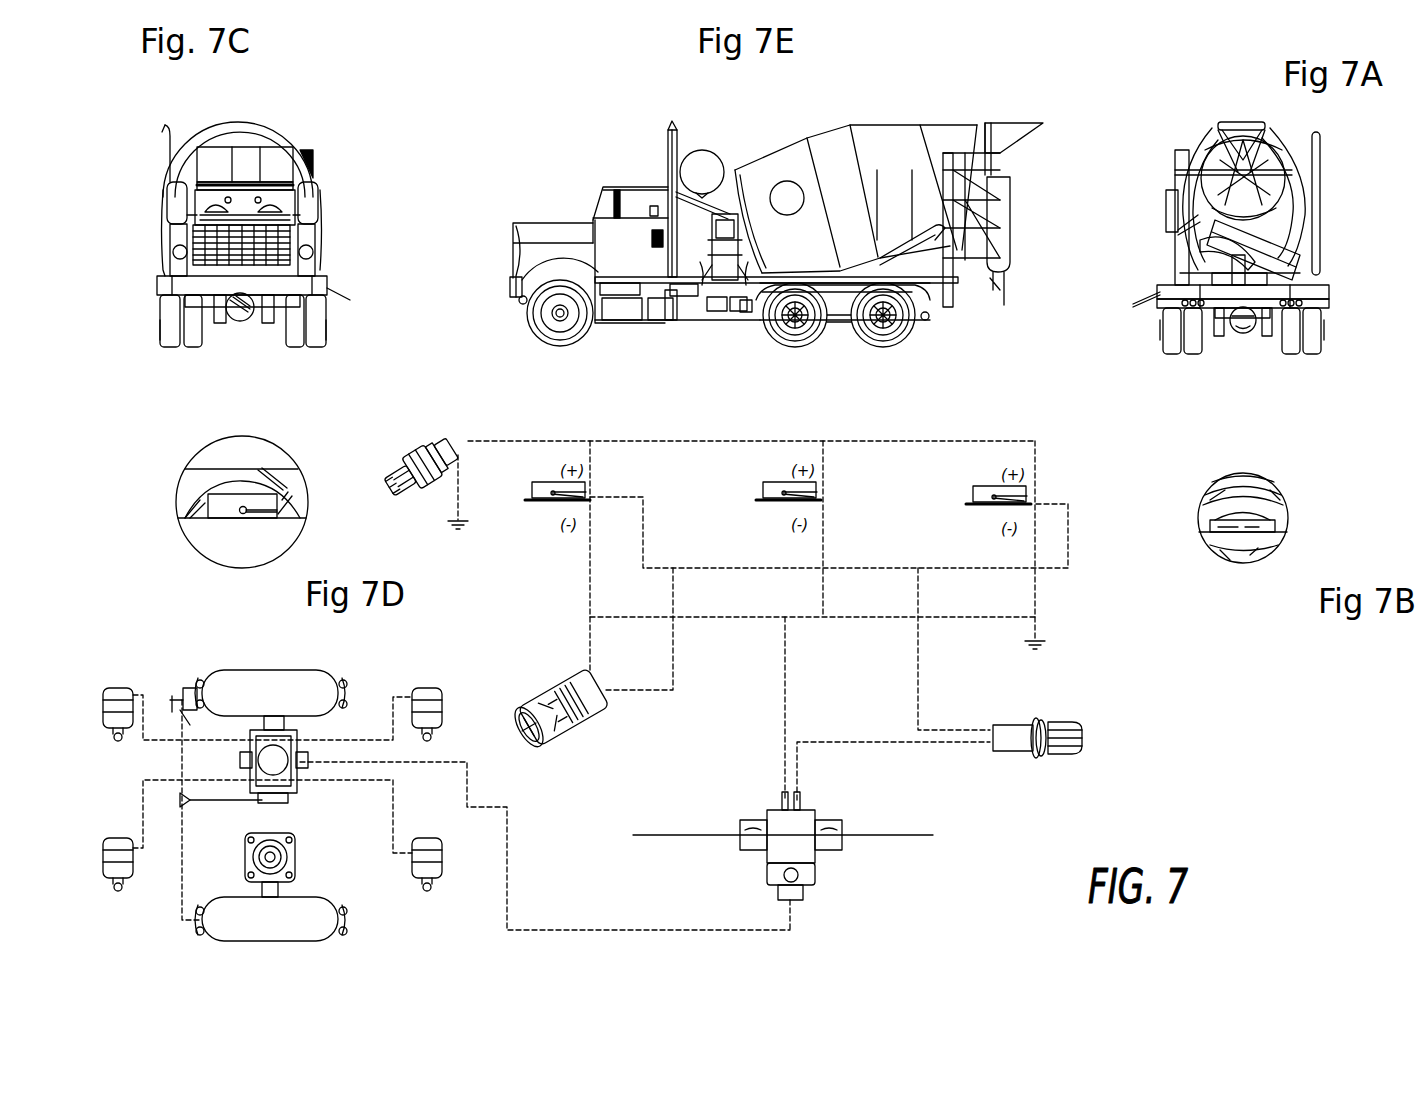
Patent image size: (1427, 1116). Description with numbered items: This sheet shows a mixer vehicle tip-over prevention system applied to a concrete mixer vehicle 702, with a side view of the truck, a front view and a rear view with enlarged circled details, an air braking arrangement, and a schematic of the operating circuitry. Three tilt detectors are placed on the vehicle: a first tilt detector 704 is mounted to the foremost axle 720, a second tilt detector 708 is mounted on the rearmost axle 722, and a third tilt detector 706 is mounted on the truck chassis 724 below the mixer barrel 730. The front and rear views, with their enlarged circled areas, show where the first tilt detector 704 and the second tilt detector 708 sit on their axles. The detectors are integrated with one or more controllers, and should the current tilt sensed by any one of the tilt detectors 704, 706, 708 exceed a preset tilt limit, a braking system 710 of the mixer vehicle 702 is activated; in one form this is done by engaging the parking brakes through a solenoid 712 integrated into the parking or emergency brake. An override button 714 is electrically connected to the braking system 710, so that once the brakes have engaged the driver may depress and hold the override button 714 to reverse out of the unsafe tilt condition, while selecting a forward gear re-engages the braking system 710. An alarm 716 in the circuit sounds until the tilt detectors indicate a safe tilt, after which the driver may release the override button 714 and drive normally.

In FIG. 7E, the mixer vehicle 702 is at (821, 242).
In FIG. 7C, the first tilt detector 704 is at (234, 318).
In FIG. 7E, the first tilt detector 704 is at (524, 303).
In FIG. 7E, the third tilt detector 706 is at (750, 314).
In FIG. 7A, the second tilt detector 708 is at (1250, 331).
In FIG. 7B, the second tilt detector 708 is at (1225, 560).
In FIG. 7E, the second tilt detector 708 is at (925, 316).
In FIG. 7D, the braking system 710 is at (180, 687).
In FIG. 7, the solenoid 712 is at (765, 810).
In FIG. 7, the override button 714 is at (1060, 722).
In FIG. 7, the audible alarm 716 is at (540, 745).
In FIG. 7E, the foremost axle 720 is at (740, 274).
In FIG. 7E, the rearmost axle 722 is at (908, 356).
In FIG. 7E, the truck chassis 724 is at (753, 340).
In FIG. 7E, the mixer barrel 730 is at (830, 135).